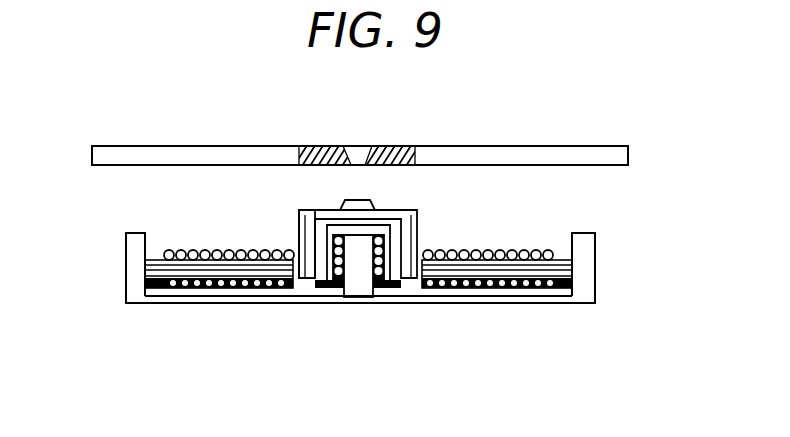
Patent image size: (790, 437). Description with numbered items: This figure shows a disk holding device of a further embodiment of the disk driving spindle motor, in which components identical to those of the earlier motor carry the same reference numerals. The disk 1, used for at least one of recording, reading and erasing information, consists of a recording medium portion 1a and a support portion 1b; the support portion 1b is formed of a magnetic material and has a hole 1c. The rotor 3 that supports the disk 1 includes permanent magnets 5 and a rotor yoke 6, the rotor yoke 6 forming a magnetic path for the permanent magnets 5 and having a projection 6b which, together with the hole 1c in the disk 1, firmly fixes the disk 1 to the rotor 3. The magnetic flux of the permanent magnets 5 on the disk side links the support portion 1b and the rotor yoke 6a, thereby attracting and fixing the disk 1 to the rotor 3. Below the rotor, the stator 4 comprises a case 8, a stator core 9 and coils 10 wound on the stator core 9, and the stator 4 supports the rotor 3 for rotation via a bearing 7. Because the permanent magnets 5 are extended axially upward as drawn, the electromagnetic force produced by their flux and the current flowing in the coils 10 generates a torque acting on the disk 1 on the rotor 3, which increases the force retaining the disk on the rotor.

The disk 1 is at (360, 120).
The recording medium portion 1a is at (208, 146).
The support portion 1b is at (389, 152).
The hole 1c is at (352, 155).
The rotor 3 is at (236, 226).
The stator 4 is at (592, 232).
The permanent magnets 5 is at (418, 238).
The rotor yoke 6 is at (398, 222).
The rotor yoke 6a is at (315, 228).
The projection 6b is at (370, 202).
The bearing 7 is at (338, 278).
The case 8 is at (358, 326).
The stator core 9 is at (155, 257).
The coils 10 is at (502, 248).